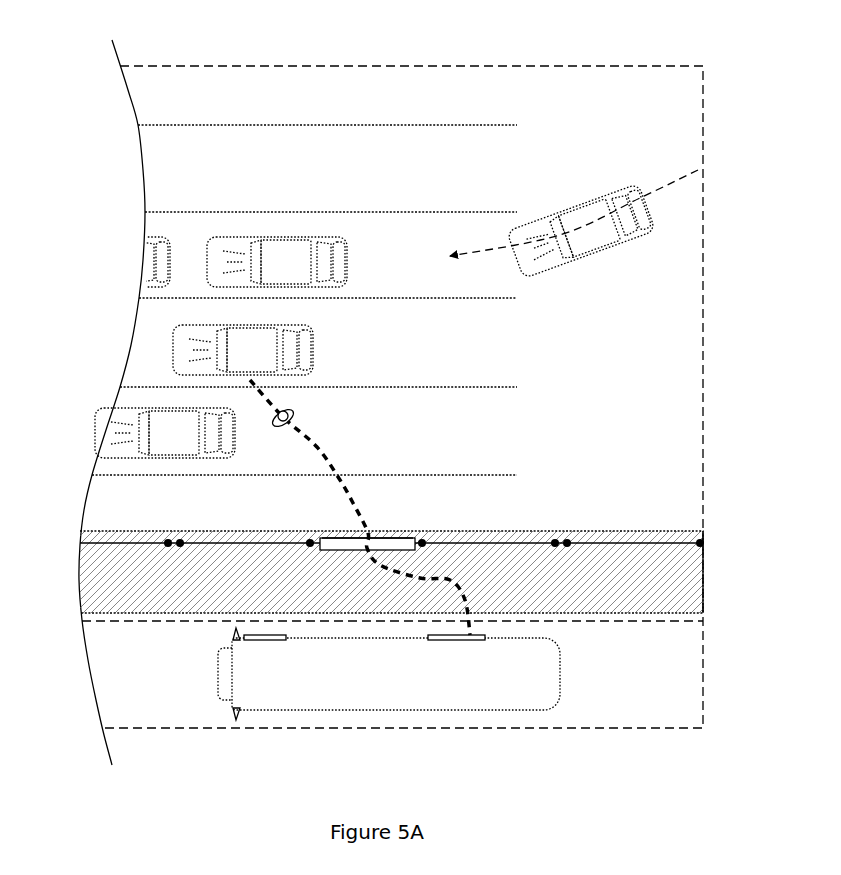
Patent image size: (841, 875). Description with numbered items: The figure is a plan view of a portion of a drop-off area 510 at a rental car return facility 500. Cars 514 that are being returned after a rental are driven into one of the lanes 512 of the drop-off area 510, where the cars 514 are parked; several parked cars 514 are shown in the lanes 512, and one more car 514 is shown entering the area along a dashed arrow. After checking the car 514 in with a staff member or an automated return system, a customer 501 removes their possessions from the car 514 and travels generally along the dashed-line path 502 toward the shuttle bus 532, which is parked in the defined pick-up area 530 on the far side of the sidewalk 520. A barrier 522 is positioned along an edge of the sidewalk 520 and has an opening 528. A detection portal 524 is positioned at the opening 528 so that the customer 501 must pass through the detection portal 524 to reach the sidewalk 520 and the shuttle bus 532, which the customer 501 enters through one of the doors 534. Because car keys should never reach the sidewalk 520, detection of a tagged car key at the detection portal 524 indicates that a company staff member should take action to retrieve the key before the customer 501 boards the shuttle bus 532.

The rental car return facility 500 is at (233, 41).
The customer 501 is at (297, 420).
The dashed-line path 502 is at (321, 449).
The drop-off area 510 is at (693, 88).
The lanes 512 is at (166, 181).
The cars 514 is at (271, 273).
The sidewalk 520 is at (694, 586).
The barrier 522 is at (243, 545).
The detection portal 524 is at (323, 553).
The opening 528 is at (388, 528).
The pick-up area 530 is at (694, 666).
The shuttle bus 532 is at (527, 686).
The doors 534 is at (252, 640).